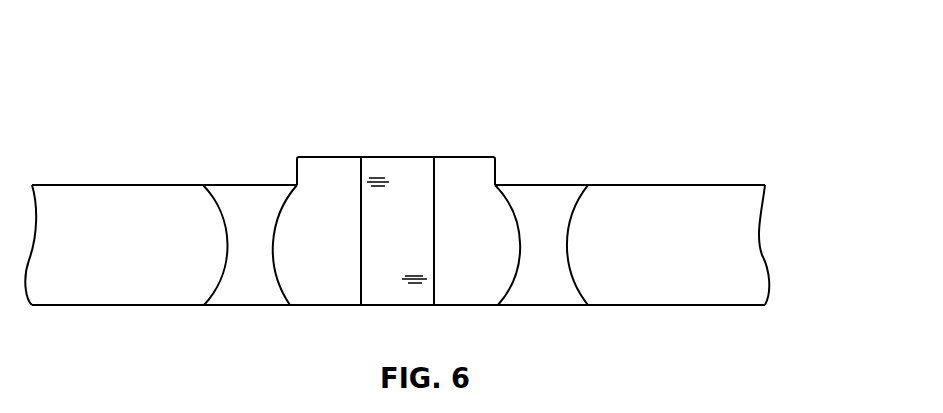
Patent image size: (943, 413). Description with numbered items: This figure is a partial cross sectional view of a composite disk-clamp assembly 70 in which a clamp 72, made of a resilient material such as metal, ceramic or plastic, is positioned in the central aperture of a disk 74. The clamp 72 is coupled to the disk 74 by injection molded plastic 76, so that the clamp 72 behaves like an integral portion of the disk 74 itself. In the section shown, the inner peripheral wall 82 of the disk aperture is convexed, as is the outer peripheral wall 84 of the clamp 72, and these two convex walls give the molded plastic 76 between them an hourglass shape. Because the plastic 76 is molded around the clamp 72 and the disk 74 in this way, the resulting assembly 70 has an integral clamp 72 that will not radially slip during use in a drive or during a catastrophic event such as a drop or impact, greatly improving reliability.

The composite disk-clamp assembly 70 is at (86, 131).
The clamp 72 is at (468, 157).
The disk 74 is at (130, 305).
The injection molded plastic 76 is at (240, 185).
The inner peripheral wall 82 is at (225, 263).
The outer peripheral wall 84 is at (517, 217).